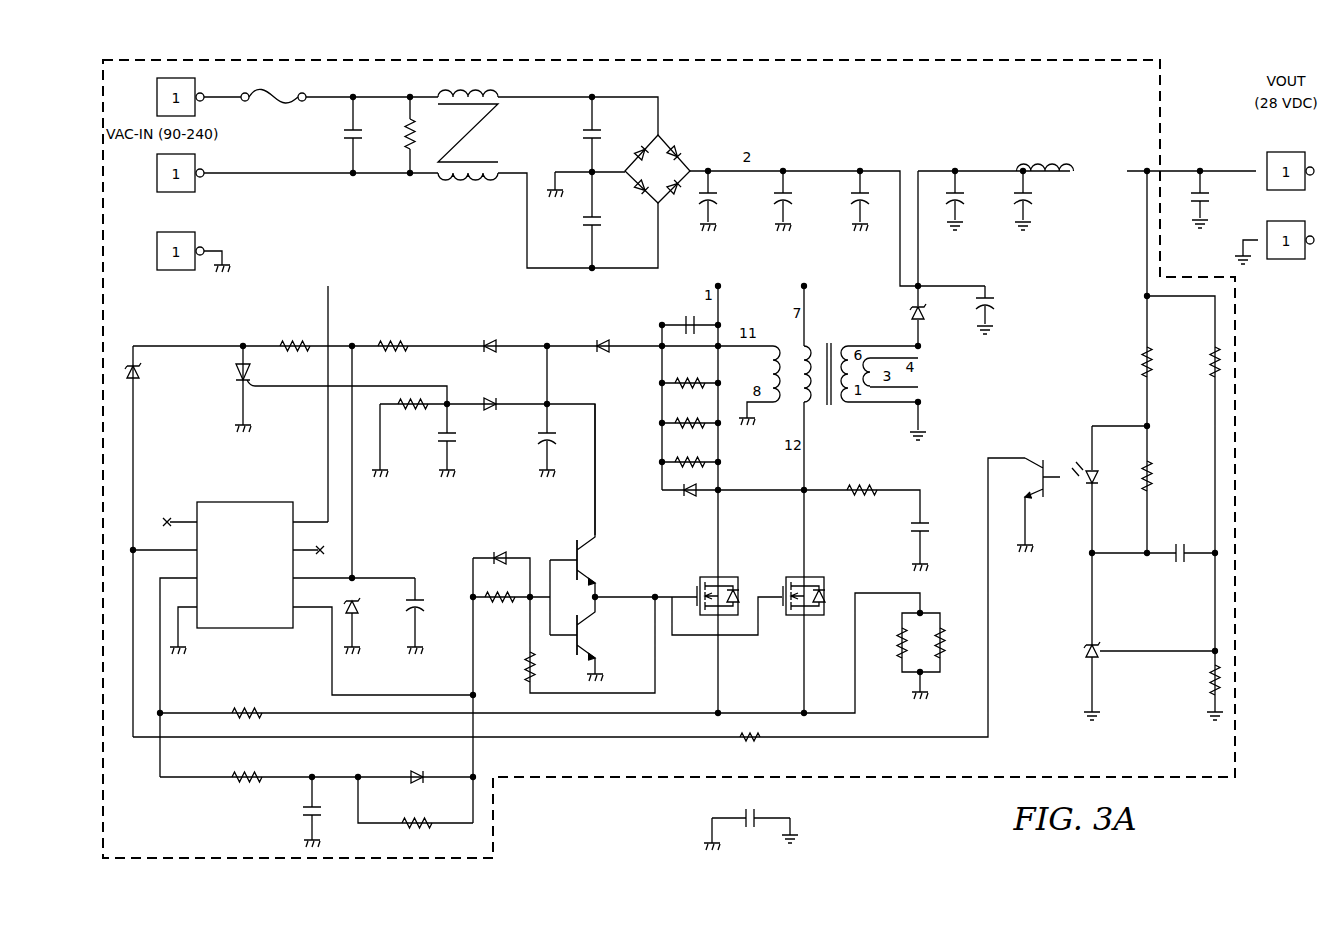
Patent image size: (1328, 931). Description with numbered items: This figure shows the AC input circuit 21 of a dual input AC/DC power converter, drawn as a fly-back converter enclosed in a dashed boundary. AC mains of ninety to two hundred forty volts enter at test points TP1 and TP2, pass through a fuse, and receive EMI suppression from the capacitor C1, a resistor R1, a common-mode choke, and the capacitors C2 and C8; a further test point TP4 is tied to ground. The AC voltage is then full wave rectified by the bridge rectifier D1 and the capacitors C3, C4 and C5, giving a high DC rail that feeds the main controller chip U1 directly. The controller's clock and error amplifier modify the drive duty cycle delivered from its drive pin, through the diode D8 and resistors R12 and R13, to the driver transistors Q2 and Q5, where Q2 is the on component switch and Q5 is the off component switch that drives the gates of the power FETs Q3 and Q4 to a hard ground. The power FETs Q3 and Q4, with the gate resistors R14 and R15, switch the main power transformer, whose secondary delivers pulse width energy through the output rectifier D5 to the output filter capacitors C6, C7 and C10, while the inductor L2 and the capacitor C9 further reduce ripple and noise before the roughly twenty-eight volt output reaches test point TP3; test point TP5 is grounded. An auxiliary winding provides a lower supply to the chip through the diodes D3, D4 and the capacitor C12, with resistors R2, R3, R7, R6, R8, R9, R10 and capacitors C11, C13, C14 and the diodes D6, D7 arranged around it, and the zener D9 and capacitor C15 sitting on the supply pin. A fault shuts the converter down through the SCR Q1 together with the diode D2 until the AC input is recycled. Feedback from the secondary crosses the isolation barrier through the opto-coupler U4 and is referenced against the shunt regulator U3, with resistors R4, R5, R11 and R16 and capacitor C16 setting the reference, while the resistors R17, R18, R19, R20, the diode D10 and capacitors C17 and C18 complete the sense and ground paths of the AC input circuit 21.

The AC input circuit 21 is at (493, 818).
The test point 1 TP1 is at (165, 97).
The test point 2 TP2 is at (165, 173).
The AC circuit output test point TP3 is at (1290, 160).
The test point 4 TP4 is at (178, 252).
The test point 5 TP5 is at (1274, 232).
The EMI suppression capacitor C1 is at (344, 135).
The resistor R1 is at (398, 135).
The EMI suppression capacitor C2 is at (580, 134).
The EMI suppression capacitor C8 is at (604, 220).
The full wave rectifier D1 is at (658, 179).
The rectifier filter capacitor C3 is at (719, 201).
The rectifier filter capacitor C4 is at (794, 201).
The rectifier filter capacitor C5 is at (871, 201).
The output filter capacitor C6 is at (966, 200).
The output filter capacitor C7 is at (1034, 200).
The output filter capacitor C9 is at (1211, 199).
The output filter capacitor C10 is at (1000, 308).
The output filter inductor L2 is at (1068, 139).
The output rectifier D5 is at (907, 313).
The diode D2 is at (145, 372).
The SCR Q1 is at (329, 384).
The resistor R2 is at (295, 336).
The resistor R3 is at (393, 336).
The bootstrap auxiliary supply diode D3 is at (490, 336).
The bootstrap auxiliary supply diode D4 is at (603, 336).
The resistor R7 is at (413, 413).
The capacitor C13 is at (462, 440).
The diode D6 is at (490, 394).
The bootstrap auxiliary supply capacitor C12 is at (562, 411).
The capacitor C11 is at (690, 315).
The resistor R6 is at (690, 373).
The resistor R8 is at (690, 413).
The resistor R9 is at (690, 453).
The diode D7 is at (690, 499).
The resistor R10 is at (862, 480).
The capacitor C14 is at (904, 545).
The main controller chip U1 is at (303, 629).
The diode D9 is at (367, 626).
The capacitor C15 is at (430, 616).
The diode D8 is at (500, 548).
The resistor R12 is at (500, 587).
The resistor R13 is at (513, 667).
The on component switch Q2 is at (601, 560).
The off component switch Q5 is at (601, 635).
The power FET Q3 is at (711, 585).
The power FET Q4 is at (797, 585).
The resistor R14 is at (886, 643).
The resistor R15 is at (956, 643).
The resistor R17 is at (247, 703).
The resistor 0.0 ohm R20 is at (750, 748).
The resistor R18 is at (247, 767).
The diode D10 is at (417, 766).
The resistor R19 is at (417, 813).
The capacitor C17 is at (296, 825).
The capacitor C18 is at (751, 821).
The resistor R4 is at (1135, 362).
The resistor R5 is at (1203, 362).
The resistor R11 is at (1130, 476).
The capacitor C16 is at (1180, 562).
The resistor R16 is at (1198, 680).
The opto-coupler U4 is at (1062, 479).
The shunt regulator U3 is at (1110, 646).